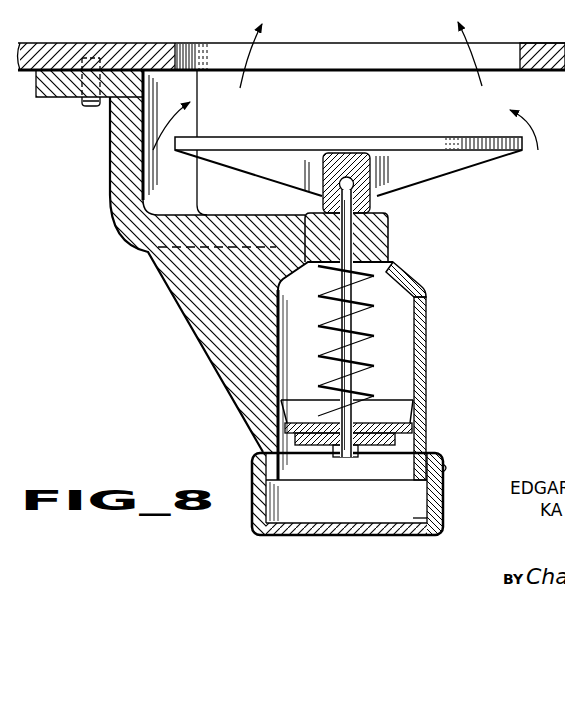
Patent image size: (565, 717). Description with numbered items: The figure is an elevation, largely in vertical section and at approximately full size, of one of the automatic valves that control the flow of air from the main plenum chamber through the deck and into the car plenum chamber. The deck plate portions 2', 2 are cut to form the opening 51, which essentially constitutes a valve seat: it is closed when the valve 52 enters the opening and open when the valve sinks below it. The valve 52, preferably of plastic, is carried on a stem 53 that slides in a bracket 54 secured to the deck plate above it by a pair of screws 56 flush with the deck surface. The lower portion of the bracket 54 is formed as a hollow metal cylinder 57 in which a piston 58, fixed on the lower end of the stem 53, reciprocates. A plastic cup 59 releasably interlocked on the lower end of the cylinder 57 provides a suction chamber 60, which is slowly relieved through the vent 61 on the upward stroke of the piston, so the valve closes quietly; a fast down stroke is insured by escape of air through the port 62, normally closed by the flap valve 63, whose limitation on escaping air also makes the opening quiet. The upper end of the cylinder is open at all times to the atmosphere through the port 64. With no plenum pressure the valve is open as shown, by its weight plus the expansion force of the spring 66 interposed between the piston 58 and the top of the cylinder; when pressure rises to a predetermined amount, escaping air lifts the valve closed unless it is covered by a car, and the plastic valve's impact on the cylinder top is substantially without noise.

The mounting plate portion 2' is at (97, 55).
The mounting plate portion 2 is at (542, 45).
The opening 51 is at (304, 50).
The valve 52 is at (414, 144).
The stem 53 is at (350, 288).
The bracket 54 is at (138, 234).
The screws 56 is at (89, 107).
The hollow cylinder 57 is at (427, 339).
The piston 58 is at (413, 431).
The plastic cup 59 is at (256, 524).
The suction chamber 60 is at (332, 476).
The vent 61 is at (348, 524).
The port 62 is at (430, 504).
The flap valve 63 is at (446, 504).
The port 64 is at (407, 270).
The spring 66 is at (363, 364).